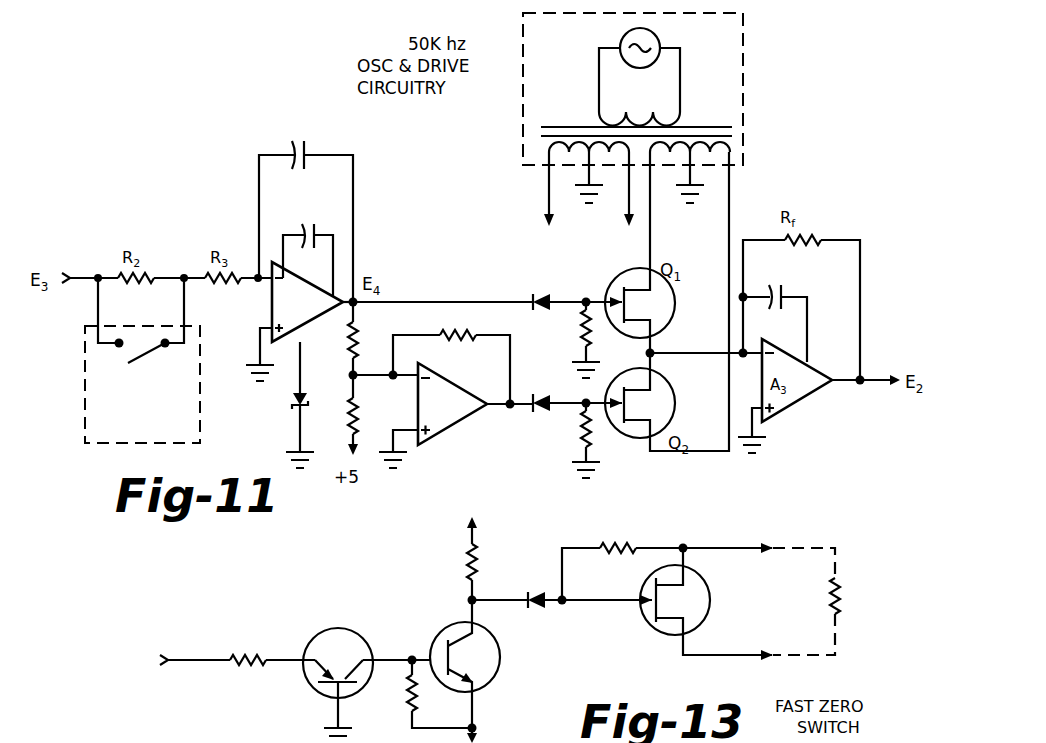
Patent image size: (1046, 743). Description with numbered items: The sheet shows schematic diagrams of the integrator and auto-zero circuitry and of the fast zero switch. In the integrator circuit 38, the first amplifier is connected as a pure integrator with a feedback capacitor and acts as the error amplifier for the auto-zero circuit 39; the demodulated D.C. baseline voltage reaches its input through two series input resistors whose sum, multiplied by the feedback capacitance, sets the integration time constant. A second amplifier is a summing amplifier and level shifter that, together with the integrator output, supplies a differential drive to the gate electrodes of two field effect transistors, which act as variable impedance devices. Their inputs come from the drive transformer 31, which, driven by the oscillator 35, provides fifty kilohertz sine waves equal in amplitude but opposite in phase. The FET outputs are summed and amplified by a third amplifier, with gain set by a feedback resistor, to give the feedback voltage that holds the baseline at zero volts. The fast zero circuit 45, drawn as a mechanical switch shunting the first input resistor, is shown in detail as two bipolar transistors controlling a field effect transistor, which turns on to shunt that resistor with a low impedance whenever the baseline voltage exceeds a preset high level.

In FIG. 11, the drive transformer 31 is at (688, 127).
In FIG. 11, the oscillator 35 is at (622, 38).
In FIG. 11, the integrator circuit 38 is at (214, 220).
In FIG. 13, the integrator circuit 38 is at (231, 699).
In FIG. 11, the auto-zero circuit 39 is at (514, 247).
In FIG. 11, the fast zero circuit 45 is at (92, 395).
In FIG. 13, the fast zero circuit 45 is at (416, 583).